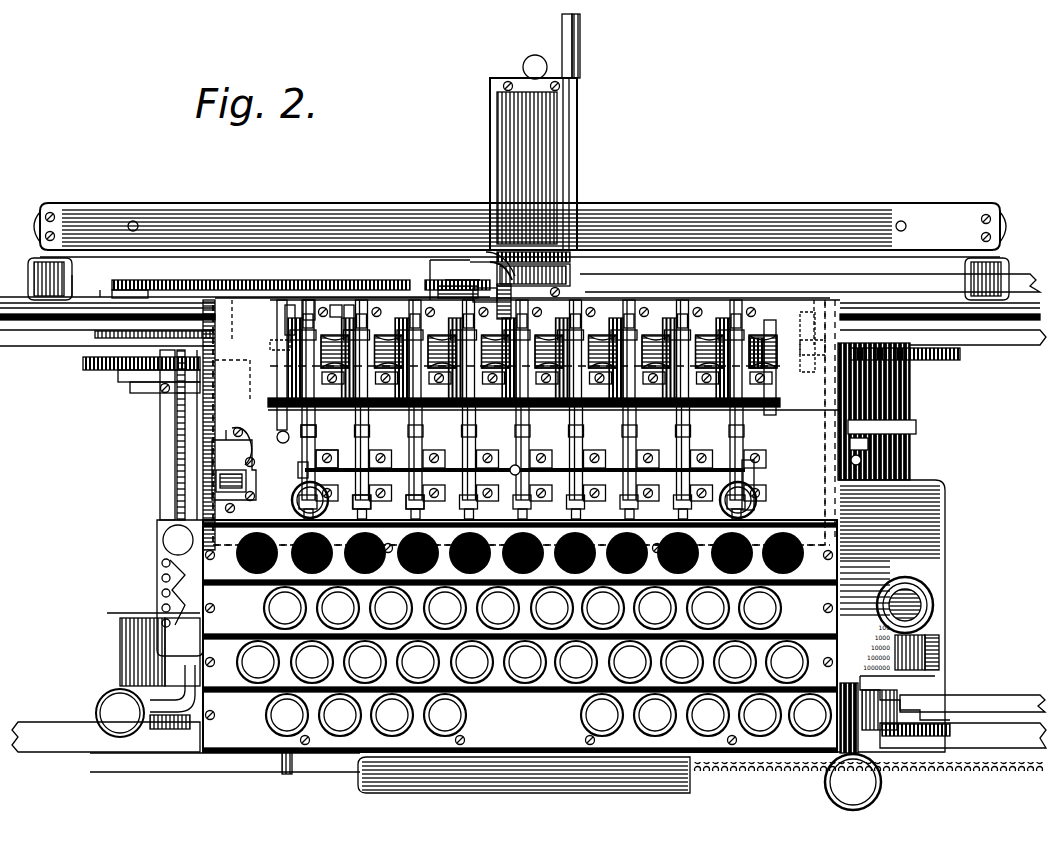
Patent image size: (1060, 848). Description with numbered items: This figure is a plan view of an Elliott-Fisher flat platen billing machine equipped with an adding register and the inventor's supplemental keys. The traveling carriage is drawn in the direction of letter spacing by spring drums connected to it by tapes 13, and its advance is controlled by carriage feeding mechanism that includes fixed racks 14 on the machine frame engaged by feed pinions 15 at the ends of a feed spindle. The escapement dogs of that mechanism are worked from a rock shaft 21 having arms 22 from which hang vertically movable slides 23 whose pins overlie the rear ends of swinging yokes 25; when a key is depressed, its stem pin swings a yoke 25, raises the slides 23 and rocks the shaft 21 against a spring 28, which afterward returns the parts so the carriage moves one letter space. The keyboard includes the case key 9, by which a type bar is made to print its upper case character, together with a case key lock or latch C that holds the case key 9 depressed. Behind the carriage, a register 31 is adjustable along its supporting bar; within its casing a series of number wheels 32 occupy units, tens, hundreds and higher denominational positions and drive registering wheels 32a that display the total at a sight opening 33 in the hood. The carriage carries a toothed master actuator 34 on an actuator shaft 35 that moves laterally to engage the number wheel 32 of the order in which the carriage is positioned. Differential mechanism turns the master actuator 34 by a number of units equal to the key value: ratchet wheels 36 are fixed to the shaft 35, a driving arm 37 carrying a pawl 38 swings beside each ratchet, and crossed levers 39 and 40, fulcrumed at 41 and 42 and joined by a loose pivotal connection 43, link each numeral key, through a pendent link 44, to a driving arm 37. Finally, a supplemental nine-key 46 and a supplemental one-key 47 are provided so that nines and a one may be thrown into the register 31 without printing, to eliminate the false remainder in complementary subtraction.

The case key 9 is at (280, 737).
The case key lock or latch C is at (290, 776).
The tapes 13 is at (793, 278).
The fixed racks 14 is at (305, 300).
The feed pinions 15 is at (497, 283).
The rock shaft 21 is at (252, 372).
The arms 22 is at (272, 344).
The slides 23 is at (262, 302).
The swinging yokes 25 is at (212, 420).
The spring 28 is at (772, 376).
The register 31 is at (520, 147).
The number wheels 32 is at (496, 262).
The registering wheels 32a is at (494, 250).
The sight opening 33 is at (552, 254).
The master actuator 34 is at (480, 293).
The actuator shaft 35 is at (290, 305).
The ratchet wheels 36 is at (303, 455).
The driving arm 37 is at (348, 305).
The pawl 38 is at (335, 305).
The lever 39 is at (332, 448).
The lever 40 is at (305, 470).
The fulcrum 41 is at (368, 503).
The fulcrum 42 is at (310, 298).
The pivotal connection 43 is at (317, 412).
The pendent link 44 is at (422, 503).
The supplemental 9-key 46 is at (757, 504).
The supplemental 1-key 47 is at (292, 505).